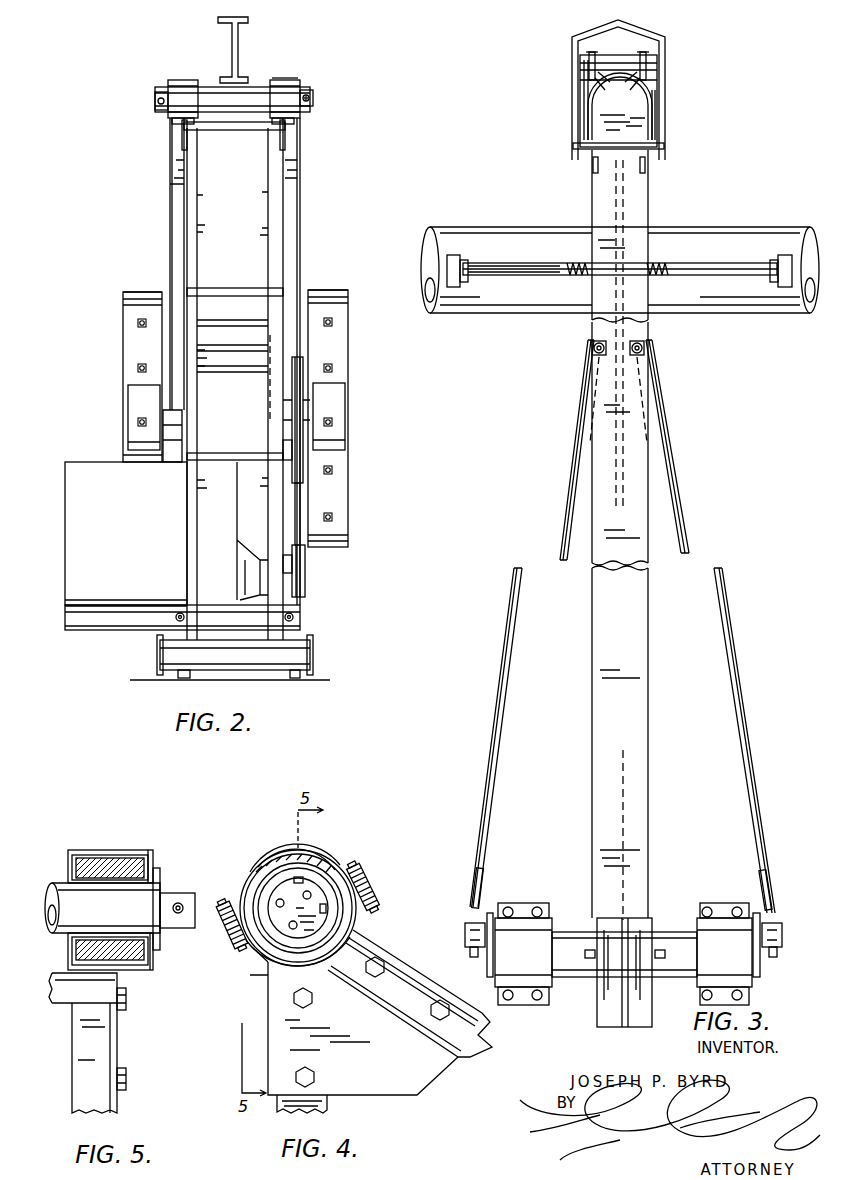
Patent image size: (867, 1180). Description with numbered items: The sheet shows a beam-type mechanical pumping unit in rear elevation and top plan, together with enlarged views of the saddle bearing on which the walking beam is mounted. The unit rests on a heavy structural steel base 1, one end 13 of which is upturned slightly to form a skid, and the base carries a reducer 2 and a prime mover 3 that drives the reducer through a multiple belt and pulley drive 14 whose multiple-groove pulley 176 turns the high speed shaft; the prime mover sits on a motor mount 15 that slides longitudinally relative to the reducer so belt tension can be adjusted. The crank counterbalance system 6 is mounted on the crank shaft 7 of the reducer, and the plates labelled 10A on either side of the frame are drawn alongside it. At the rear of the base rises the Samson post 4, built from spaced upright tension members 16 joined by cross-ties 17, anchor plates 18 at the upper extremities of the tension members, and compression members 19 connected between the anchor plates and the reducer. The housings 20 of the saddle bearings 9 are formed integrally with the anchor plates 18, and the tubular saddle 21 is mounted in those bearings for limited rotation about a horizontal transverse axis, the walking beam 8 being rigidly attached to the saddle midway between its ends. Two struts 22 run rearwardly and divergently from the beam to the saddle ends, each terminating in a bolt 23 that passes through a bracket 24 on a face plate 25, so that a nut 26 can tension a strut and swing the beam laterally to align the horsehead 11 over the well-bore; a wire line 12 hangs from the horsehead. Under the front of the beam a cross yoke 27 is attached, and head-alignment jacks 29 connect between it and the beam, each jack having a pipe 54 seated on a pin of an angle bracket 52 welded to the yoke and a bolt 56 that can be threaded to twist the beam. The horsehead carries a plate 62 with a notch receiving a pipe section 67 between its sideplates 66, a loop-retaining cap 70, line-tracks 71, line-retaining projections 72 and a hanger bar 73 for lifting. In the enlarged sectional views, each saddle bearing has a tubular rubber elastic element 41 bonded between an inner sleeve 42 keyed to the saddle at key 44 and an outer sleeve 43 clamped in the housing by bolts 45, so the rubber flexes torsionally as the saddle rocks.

In FIG. 2, the base 1 is at (178, 678).
In FIG. 2, the reducer 2 is at (234, 330).
In FIG. 2, the prime mover 3 is at (85, 478).
In FIG. 2, the Samson post 4 is at (268, 197).
In FIG. 2, the crank counterbalance system 6 is at (116, 341).
In FIG. 2, the crank shaft 7 is at (305, 418).
In FIG. 2, the walking beam 8 is at (216, 20).
In FIG. 3, the walking beam 8 is at (640, 762).
In FIG. 2, the saddle bearings 9 is at (186, 82).
In FIG. 3, the saddle bearings 9 is at (536, 928).
In FIG. 5, the saddle bearings 9 is at (150, 855).
In FIG. 2, the plate top band 10A is at (125, 300).
In FIG. 3, the horsehead 11 is at (666, 97).
In FIG. 3, the wire line 12 is at (643, 56).
In FIG. 2, the end of the base 13 is at (296, 678).
In FIG. 2, the belt and pulley drive 14 is at (310, 560).
In FIG. 2, the motor mount 15 is at (296, 620).
In FIG. 2, the tension members 16 is at (268, 220).
In FIG. 4, the tension members 16 is at (320, 1105).
In FIG. 5, the tension members 16 is at (100, 1060).
In FIG. 2, the cross-ties 17 is at (233, 130).
In FIG. 5, the cross-ties 17 is at (58, 1000).
In FIG. 2, the anchor plates 18 is at (182, 135).
In FIG. 4, the anchor plates 18 is at (398, 1090).
In FIG. 5, the anchor plates 18 is at (126, 1090).
In FIG. 2, the compression members 19 is at (172, 185).
In FIG. 4, the compression members 19 is at (451, 1060).
In FIG. 2, the bearing housings 20 is at (277, 80).
In FIG. 4, the bearing housings 20 is at (290, 877).
In FIG. 5, the bearing housings 20 is at (104, 852).
In FIG. 2, the tubular saddle 21 is at (205, 88).
In FIG. 3, the tubular saddle 21 is at (577, 968).
In FIG. 4, the tubular saddle 21 is at (295, 930).
In FIG. 5, the tubular saddle 21 is at (57, 895).
In FIG. 3, the struts 22 is at (563, 538).
In FIG. 2, the bolt 23 is at (312, 98).
In FIG. 3, the bolt 23 is at (488, 880).
In FIG. 5, the bolt 23 is at (179, 915).
In FIG. 2, the bracket 24 is at (157, 95).
In FIG. 3, the bracket 24 is at (470, 924).
In FIG. 5, the bracket 24 is at (182, 896).
In FIG. 2, the face plate 25 is at (300, 112).
In FIG. 3, the face plate 25 is at (493, 957).
In FIG. 5, the face plate 25 is at (162, 875).
In FIG. 3, the nut 26 is at (778, 950).
In FIG. 3, the cross yoke 27 is at (726, 242).
In FIG. 3, the head-alignment jacks 29 is at (536, 264).
In FIG. 4, the tubular rubber elastic element 41 is at (317, 880).
In FIG. 5, the tubular rubber elastic element 41 is at (125, 852).
In FIG. 4, the inner sleeve 42 is at (346, 877).
In FIG. 5, the inner sleeve 42 is at (150, 953).
In FIG. 4, the outer sleeve 43 is at (301, 856).
In FIG. 5, the outer sleeve 43 is at (140, 967).
In FIG. 4, the key 44 is at (292, 879).
In FIG. 5, the key 44 is at (90, 875).
In FIG. 4, the bolts 45 is at (372, 870).
In FIG. 3, the angle brackets 52 is at (447, 263).
In FIG. 3, the pipes 54 is at (512, 276).
In FIG. 3, the bolt 56 is at (586, 272).
In FIG. 3, the plate 62 is at (640, 170).
In FIG. 3, the sideplates 66 is at (660, 112).
In FIG. 3, the pipe section 67 is at (660, 133).
In FIG. 3, the loop-retaining cap 70 is at (588, 102).
In FIG. 3, the line-tracks 71 is at (597, 72).
In FIG. 3, the line-retaining projection 72 is at (640, 84).
In FIG. 3, the hanger bar 73 is at (606, 26).
In FIG. 2, the multiple-groove pulley 176 is at (290, 445).